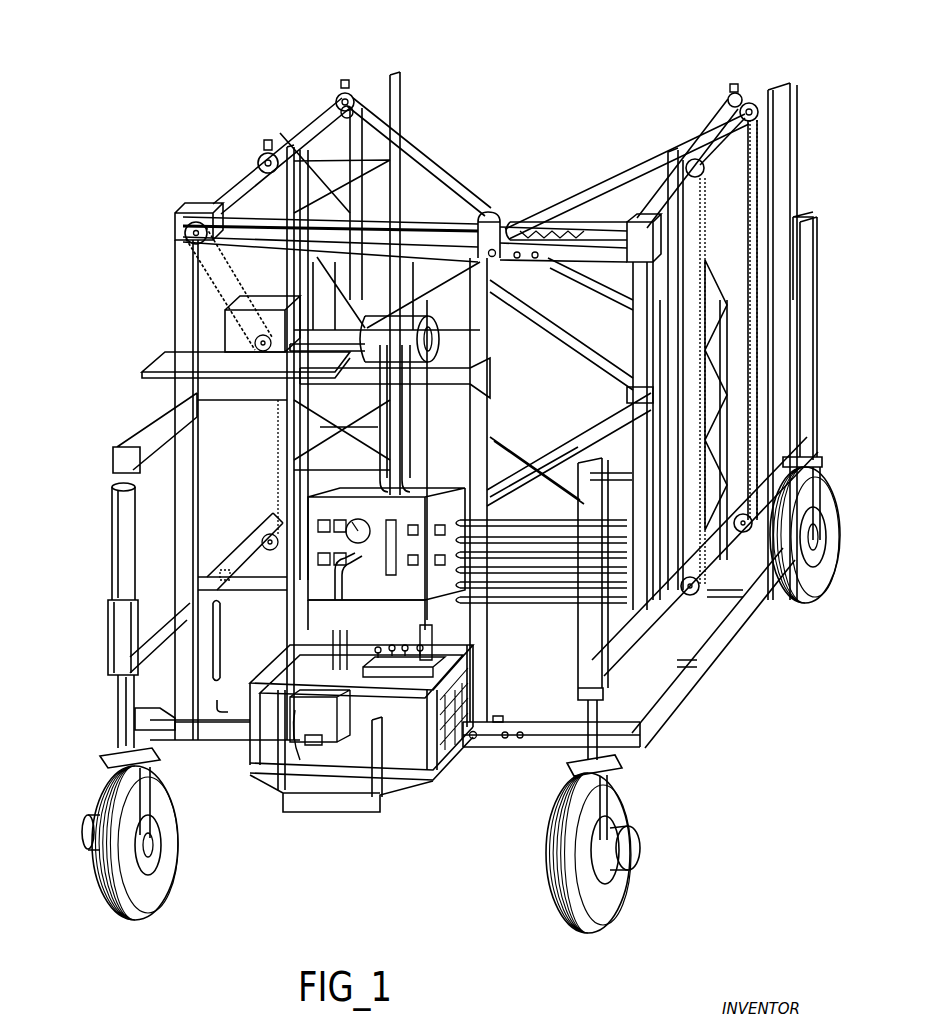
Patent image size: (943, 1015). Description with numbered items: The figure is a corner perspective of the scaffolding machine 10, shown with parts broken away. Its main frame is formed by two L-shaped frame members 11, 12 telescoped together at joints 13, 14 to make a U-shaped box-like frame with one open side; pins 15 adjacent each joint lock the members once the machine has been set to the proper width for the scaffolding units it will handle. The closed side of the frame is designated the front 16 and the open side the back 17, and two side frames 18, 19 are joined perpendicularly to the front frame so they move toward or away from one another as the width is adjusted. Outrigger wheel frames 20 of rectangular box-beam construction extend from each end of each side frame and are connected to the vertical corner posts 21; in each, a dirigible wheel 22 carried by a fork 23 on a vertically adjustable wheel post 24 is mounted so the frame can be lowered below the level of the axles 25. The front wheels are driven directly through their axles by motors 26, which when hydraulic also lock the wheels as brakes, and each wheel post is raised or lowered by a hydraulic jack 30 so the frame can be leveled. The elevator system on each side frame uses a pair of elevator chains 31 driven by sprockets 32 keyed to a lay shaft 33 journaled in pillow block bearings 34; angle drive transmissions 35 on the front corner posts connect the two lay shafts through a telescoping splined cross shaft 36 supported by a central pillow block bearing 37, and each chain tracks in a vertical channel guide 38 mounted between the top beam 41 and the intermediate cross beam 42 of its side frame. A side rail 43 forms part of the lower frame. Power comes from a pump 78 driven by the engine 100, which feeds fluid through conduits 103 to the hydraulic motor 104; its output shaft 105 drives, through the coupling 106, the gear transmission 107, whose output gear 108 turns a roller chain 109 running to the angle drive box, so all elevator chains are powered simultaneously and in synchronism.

The scaffolding machine 10 is at (454, 893).
The L-shaped frame member 11 is at (628, 307).
The L-shaped frame member 12 is at (175, 310).
The telescoping joint 13 is at (503, 720).
The telescoping joint 14 is at (516, 231).
The pins 15 is at (496, 260).
The front 16 is at (318, 825).
The back 17 is at (533, 119).
The side frame 18 is at (808, 200).
The side frame 19 is at (252, 502).
The outrigger wheel frame 20 is at (425, 217).
The vertical corner post 21 is at (402, 112).
The dirigible wheel 22 is at (160, 892).
The fork 23 is at (150, 795).
The wheel post 24 is at (118, 716).
The axle 25 is at (152, 845).
The motor 26 is at (84, 830).
The hydraulic jack 30 is at (112, 602).
The elevator chain 31 is at (262, 156).
The sprocket 32 is at (258, 164).
The lay shaft 33 is at (308, 132).
The pillow block bearing 34 is at (338, 110).
The angle drive transmission 35 is at (185, 207).
The cross shaft 36 is at (548, 228).
The central pillow block bearing 37 is at (490, 212).
The vertical channel guide 38 is at (757, 162).
The top beam 41 is at (394, 82).
The intermediate cross beam 42 is at (236, 545).
The side rail 43 is at (708, 652).
The pump 78 is at (310, 735).
The engine 100 is at (358, 748).
The conduits 103 is at (415, 405).
The hydraulic motor 104 is at (440, 329).
The output shaft 105 is at (327, 358).
The coupling 106 is at (272, 392).
The gear transmission 107 is at (262, 331).
The output gear 108 is at (213, 372).
The roller chain 109 is at (188, 240).